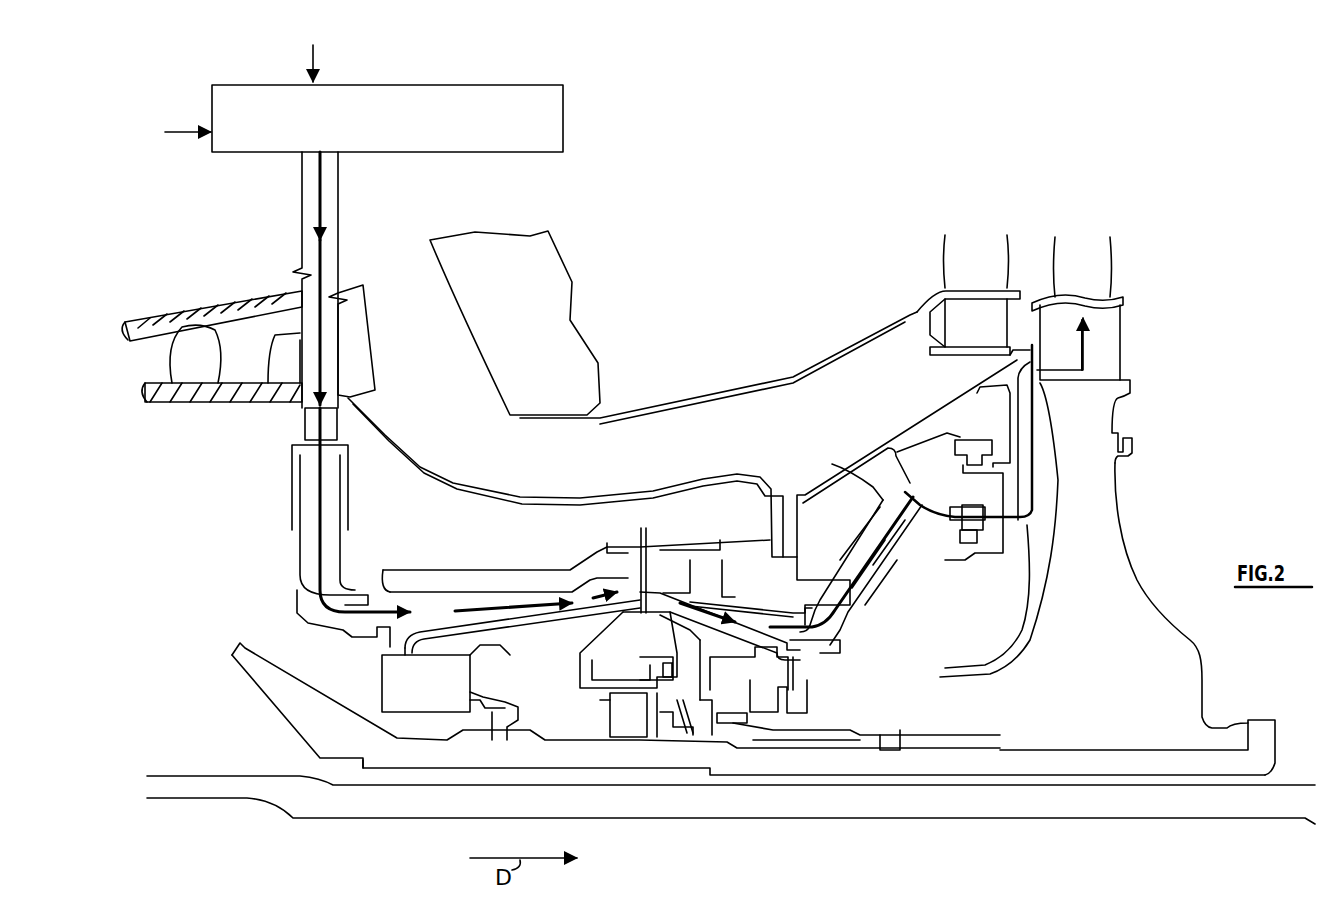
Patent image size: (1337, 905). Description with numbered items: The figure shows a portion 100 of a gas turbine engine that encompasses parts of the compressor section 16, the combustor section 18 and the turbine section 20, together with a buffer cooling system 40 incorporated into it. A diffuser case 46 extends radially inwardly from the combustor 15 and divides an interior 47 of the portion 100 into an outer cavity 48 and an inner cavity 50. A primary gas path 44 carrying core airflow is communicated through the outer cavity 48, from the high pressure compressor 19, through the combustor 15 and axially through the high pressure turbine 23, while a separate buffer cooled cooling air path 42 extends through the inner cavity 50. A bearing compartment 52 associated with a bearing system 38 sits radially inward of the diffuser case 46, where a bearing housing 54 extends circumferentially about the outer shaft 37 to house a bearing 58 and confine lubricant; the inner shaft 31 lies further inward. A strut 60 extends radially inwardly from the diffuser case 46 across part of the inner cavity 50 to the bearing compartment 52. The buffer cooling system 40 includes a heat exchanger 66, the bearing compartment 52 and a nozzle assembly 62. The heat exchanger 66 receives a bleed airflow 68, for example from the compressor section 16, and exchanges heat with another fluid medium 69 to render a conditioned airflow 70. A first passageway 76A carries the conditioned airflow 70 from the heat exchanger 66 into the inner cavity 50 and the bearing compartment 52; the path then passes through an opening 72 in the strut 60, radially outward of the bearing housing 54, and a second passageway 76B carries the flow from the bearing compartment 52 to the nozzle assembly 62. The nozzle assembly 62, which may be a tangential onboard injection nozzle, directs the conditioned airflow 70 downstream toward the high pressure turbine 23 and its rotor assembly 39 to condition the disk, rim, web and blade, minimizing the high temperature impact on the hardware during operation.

The portion 100 is at (733, 235).
The combustor 15 is at (756, 287).
The compressor section 16 is at (222, 228).
The combustor section 18 is at (585, 263).
The high pressure compressor 19 is at (169, 288).
The turbine section 20 is at (1097, 232).
The high pressure turbine 23 is at (1044, 277).
The inner shaft 31 is at (965, 800).
The outer shaft 37 is at (758, 757).
The bearing system 38 is at (484, 730).
The rotor assembly 39 is at (1125, 475).
The buffer cooling system 40 is at (411, 72).
The buffer cooled cooling air path 42 is at (325, 540).
The primary gas path 44 is at (365, 343).
The diffuser case 46 is at (588, 492).
The interior 47 is at (348, 650).
The outer cavity 48 is at (454, 426).
The inner cavity 50 is at (456, 534).
The bearing compartment 52 is at (554, 684).
The bearing housing 54 is at (530, 610).
The bearing 58 is at (630, 713).
The strut 60 is at (643, 548).
The nozzle assembly 62 is at (963, 532).
The heat exchanger 66 is at (563, 108).
The bleed airflow 68 is at (180, 134).
The fluid medium 69 is at (316, 58).
The conditioned airflow 70 is at (326, 225).
The opening 72 is at (628, 552).
The first passageway 76A is at (340, 270).
The second passageway 76B is at (880, 580).